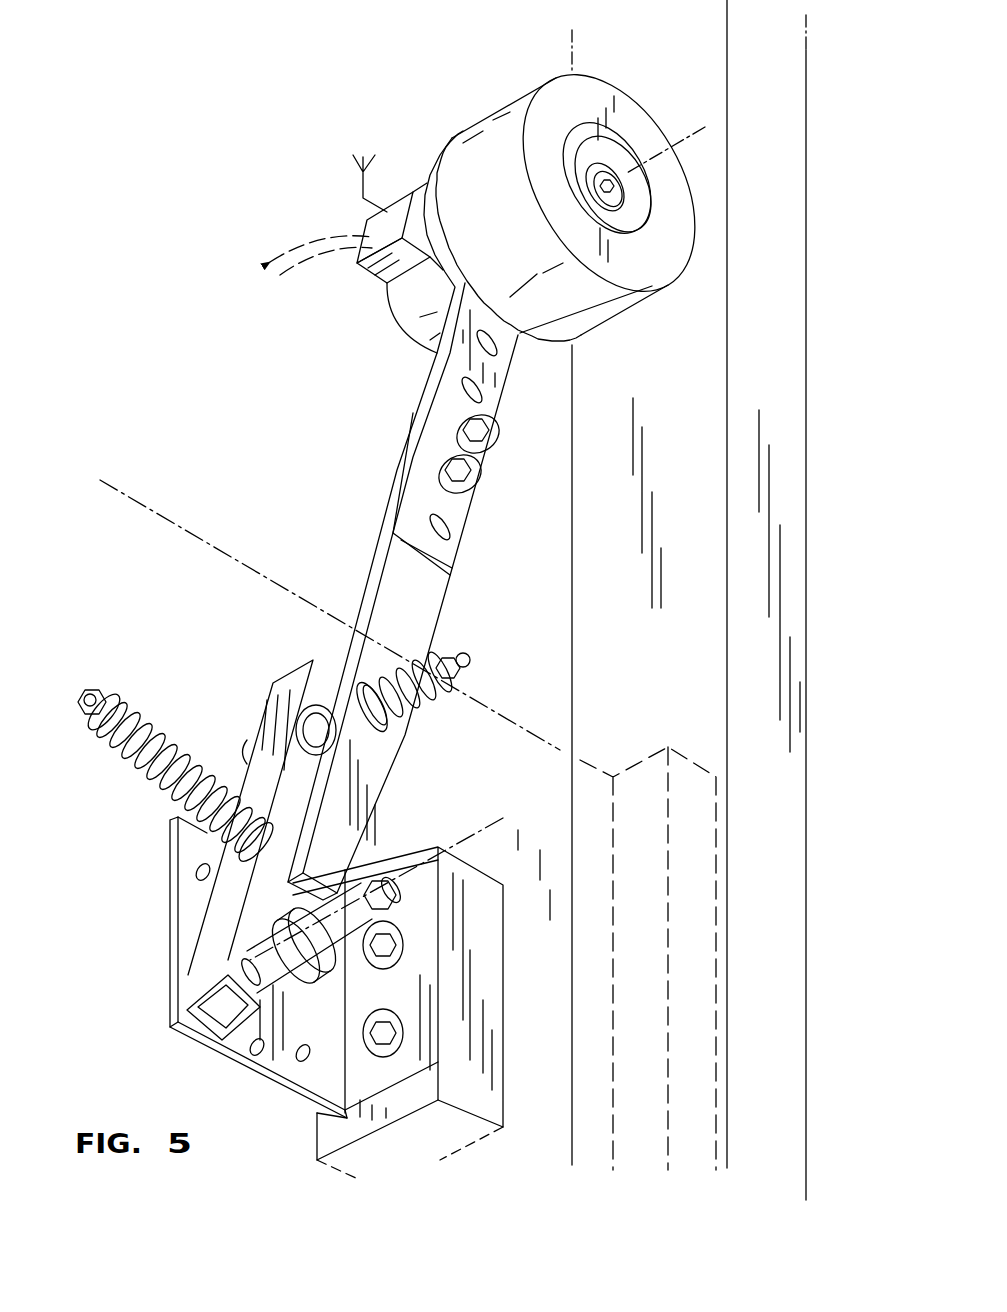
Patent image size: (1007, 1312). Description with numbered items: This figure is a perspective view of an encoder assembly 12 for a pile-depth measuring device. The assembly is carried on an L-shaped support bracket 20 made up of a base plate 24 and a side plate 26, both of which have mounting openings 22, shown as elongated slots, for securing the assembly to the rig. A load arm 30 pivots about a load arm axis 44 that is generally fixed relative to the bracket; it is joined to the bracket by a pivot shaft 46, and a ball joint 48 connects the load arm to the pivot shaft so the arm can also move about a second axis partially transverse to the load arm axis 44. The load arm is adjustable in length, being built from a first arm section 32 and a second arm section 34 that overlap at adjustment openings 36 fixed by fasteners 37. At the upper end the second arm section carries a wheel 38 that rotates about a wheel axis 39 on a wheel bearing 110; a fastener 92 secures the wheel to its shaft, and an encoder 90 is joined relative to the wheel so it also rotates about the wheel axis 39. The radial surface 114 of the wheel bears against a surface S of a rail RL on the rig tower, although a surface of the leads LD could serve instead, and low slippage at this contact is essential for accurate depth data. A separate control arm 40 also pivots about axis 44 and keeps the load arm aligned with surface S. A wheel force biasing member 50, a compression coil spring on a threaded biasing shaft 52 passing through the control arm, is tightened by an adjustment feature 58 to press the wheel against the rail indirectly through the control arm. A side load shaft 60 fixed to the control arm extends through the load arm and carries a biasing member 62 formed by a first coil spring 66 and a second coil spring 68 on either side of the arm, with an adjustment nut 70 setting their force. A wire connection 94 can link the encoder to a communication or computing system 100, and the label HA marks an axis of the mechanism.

The encoder assembly 12 is at (178, 242).
The support bracket 20 is at (168, 908).
The mounting openings 22 is at (198, 870).
The base plate 24 is at (425, 978).
The side plate 26 is at (235, 1040).
The load arm 30 is at (472, 573).
The first arm section 32 is at (420, 612).
The second arm section 34 is at (500, 370).
The adjustment openings 36 is at (480, 394).
The fasteners 37 is at (470, 458).
The wheel 38 is at (490, 108).
The wheel axis 39 is at (708, 127).
The control arm 40 is at (280, 707).
The load arm axis 44 is at (495, 825).
The pivot shaft 46 is at (248, 958).
The ball joint 48 is at (323, 985).
The wheel force biasing member 50 is at (150, 775).
The biasing shaft 52 is at (170, 745).
The adjustment feature 58 is at (100, 725).
The side load shaft 60 is at (432, 717).
The biasing member 62 is at (392, 665).
The first coil spring 66 is at (316, 720).
The second coil spring 68 is at (390, 722).
The adjustment nut 70 is at (455, 672).
The encoder 90 is at (407, 317).
The fastener 92 is at (615, 200).
The wire connection 94 is at (307, 240).
The communication system and/or computing system 100 is at (365, 280).
The wheel bearing 110 is at (603, 157).
The radial surface 114 is at (465, 168).
The hinge axis HA is at (330, 609).
The rail RL is at (787, 370).
The leads LD is at (807, 625).
The surface S is at (590, 633).